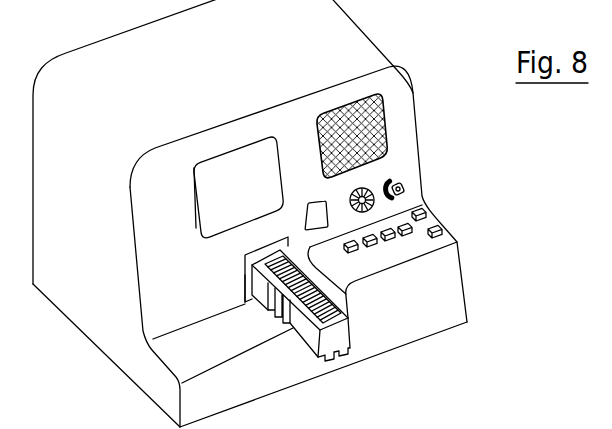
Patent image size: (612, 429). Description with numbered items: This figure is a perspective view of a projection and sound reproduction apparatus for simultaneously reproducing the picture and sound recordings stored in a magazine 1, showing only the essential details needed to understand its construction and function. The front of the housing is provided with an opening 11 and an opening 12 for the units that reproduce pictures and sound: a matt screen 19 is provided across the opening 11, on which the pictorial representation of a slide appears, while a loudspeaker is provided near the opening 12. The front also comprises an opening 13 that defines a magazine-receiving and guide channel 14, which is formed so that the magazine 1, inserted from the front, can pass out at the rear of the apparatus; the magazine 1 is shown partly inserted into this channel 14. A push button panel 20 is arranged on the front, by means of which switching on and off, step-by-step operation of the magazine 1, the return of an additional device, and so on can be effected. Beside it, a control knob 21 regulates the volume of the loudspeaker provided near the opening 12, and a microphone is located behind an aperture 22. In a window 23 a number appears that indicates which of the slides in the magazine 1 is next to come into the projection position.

The magazine 1 is at (335, 337).
The opening 11 is at (194, 192).
The opening 12 is at (386, 108).
The opening 13 is at (243, 291).
The magazine-receiving and guide channel 14 is at (245, 261).
The matt screen 19 is at (238, 187).
The push button panel 20 is at (433, 211).
The control knob 21 is at (406, 188).
The aperture 22 is at (371, 188).
The window 23 is at (312, 202).